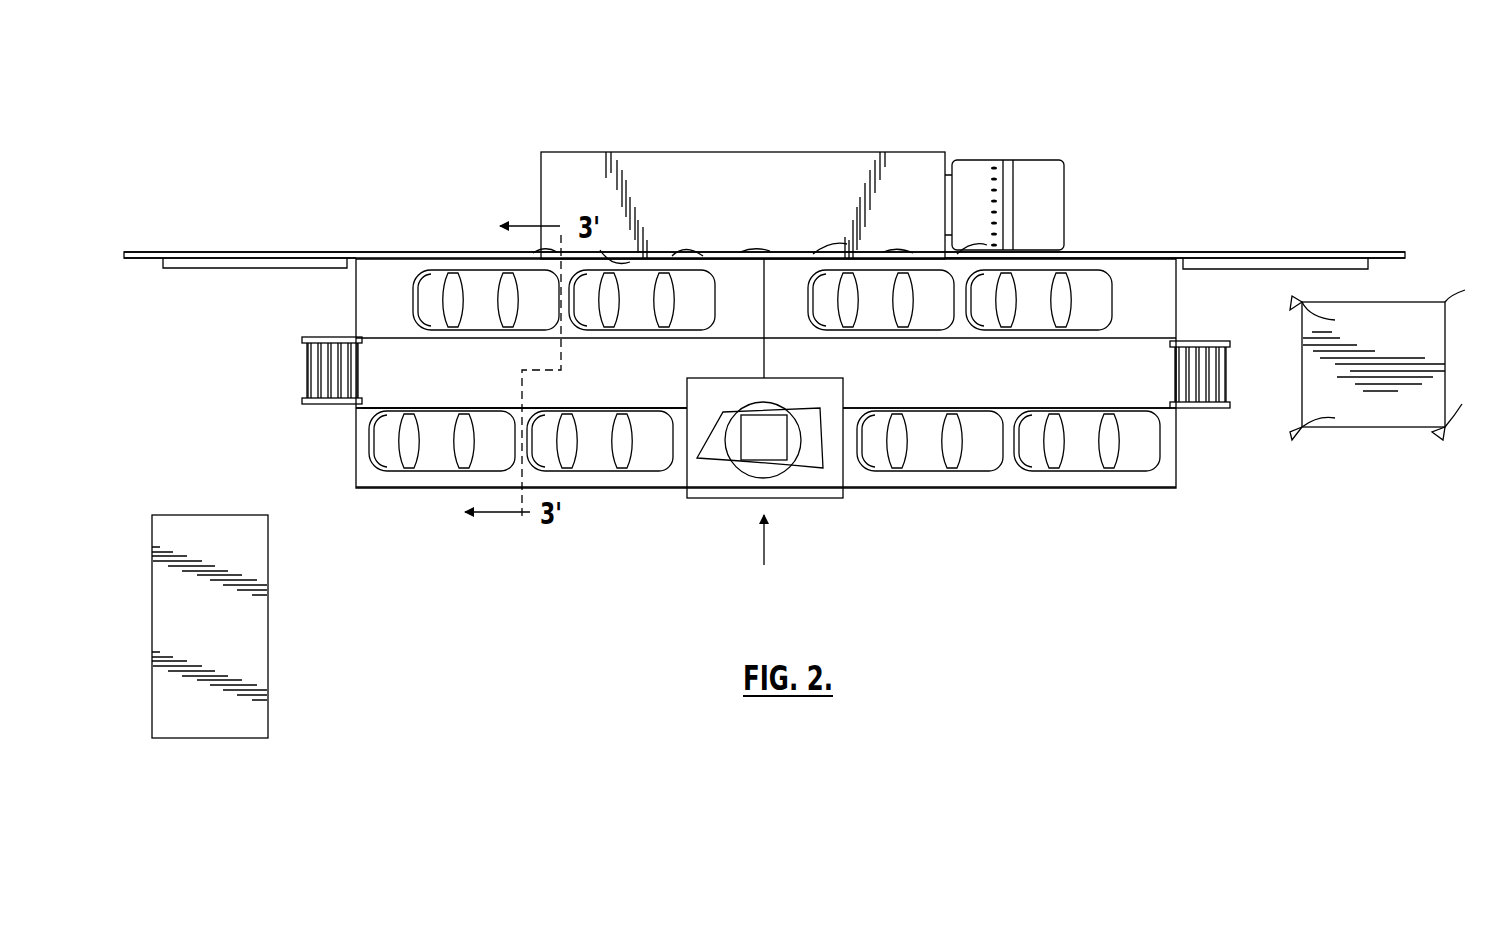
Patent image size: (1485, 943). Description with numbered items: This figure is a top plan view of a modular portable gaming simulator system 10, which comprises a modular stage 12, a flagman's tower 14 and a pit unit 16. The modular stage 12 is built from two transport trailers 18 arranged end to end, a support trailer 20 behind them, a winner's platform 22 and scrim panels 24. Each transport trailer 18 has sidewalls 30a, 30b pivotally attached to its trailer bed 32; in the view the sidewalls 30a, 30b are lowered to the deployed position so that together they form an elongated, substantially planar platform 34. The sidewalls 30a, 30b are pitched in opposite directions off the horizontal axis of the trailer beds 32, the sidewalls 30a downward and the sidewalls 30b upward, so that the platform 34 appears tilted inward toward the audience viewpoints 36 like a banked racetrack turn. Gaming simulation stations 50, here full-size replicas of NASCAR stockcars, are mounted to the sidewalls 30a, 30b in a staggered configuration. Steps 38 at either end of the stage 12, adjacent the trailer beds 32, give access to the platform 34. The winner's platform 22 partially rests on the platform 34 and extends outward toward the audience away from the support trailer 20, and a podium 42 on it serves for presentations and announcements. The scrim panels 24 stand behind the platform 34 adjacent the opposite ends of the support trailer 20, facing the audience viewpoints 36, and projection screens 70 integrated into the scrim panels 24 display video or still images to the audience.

The modular portable gaming simulator system 10 is at (1176, 126).
The modular stage 12 is at (1070, 530).
The flagman's tower 14 is at (1337, 483).
The pit unit 16 is at (270, 645).
The transport trailers 18 is at (620, 487).
The support trailer 20 is at (858, 152).
The winner's platform 22 is at (730, 490).
The scrim panels 24 is at (380, 252).
The sidewalls 30a is at (372, 470).
The sidewalls 30b is at (356, 297).
The trailer beds 32 is at (395, 390).
The platform 34 is at (292, 367).
The audience viewpoints 36 is at (765, 548).
The steps 38 is at (315, 388).
The podium 42 is at (762, 415).
The gaming simulation stations 50 is at (475, 270).
The projection screens 70 is at (250, 268).